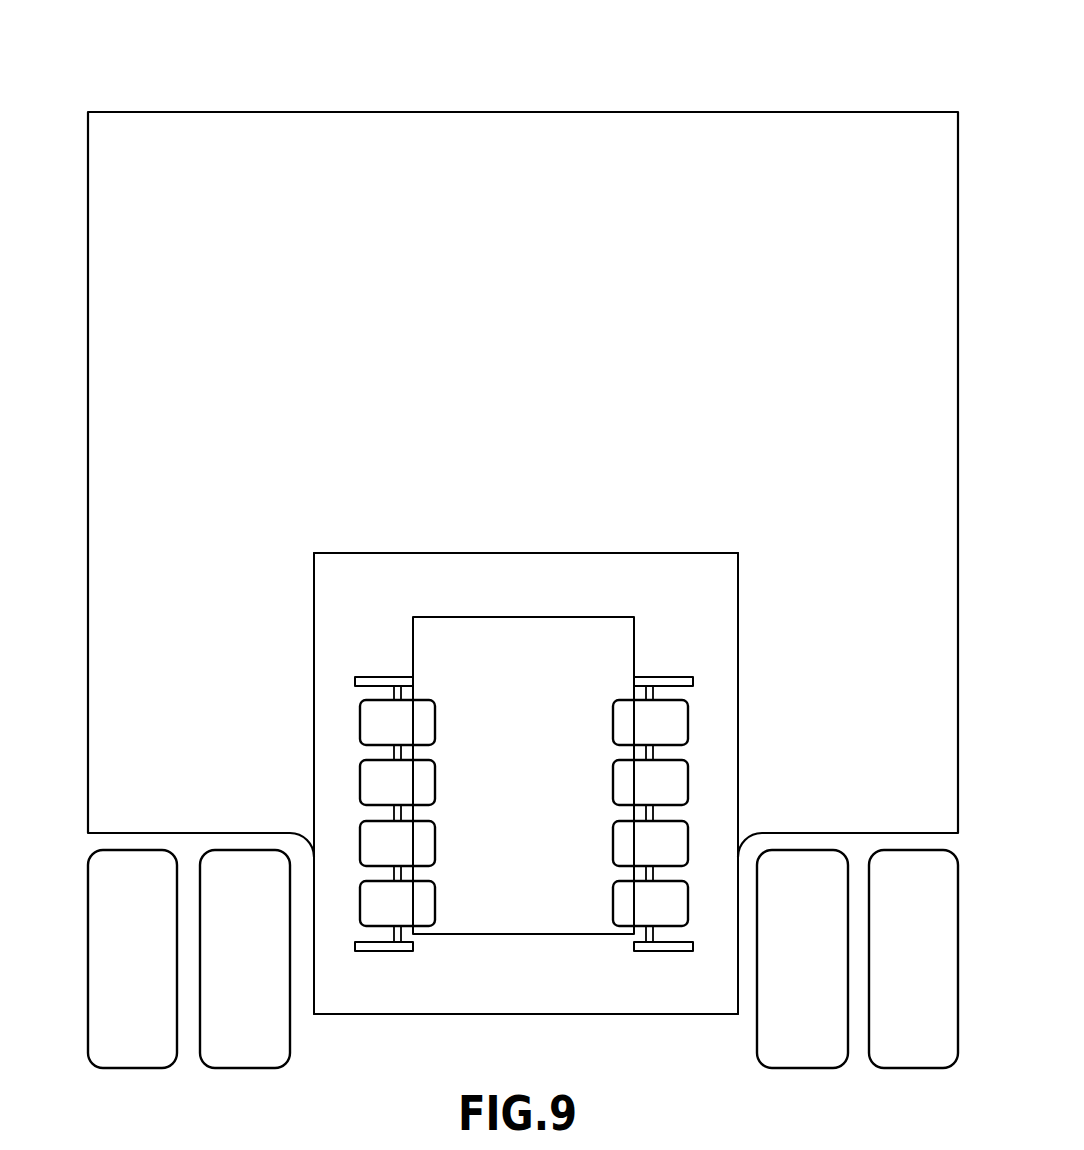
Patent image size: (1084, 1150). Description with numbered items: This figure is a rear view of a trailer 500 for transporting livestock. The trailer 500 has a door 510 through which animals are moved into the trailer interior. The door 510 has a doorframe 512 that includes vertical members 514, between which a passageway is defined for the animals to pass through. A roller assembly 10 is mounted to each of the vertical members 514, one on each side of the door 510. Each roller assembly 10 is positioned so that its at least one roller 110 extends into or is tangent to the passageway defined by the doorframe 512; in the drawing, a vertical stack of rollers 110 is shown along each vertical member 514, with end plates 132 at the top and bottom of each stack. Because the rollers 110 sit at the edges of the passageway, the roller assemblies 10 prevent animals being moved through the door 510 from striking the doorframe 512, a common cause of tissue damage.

The trailer 500 is at (142, 62).
The door 510 is at (593, 552).
The doorframe 512 is at (536, 620).
The vertical members 514 is at (325, 745).
The roller assembly 10 is at (511, 802).
The roller 110 is at (613, 901).
The end plate 132 is at (523, 816).